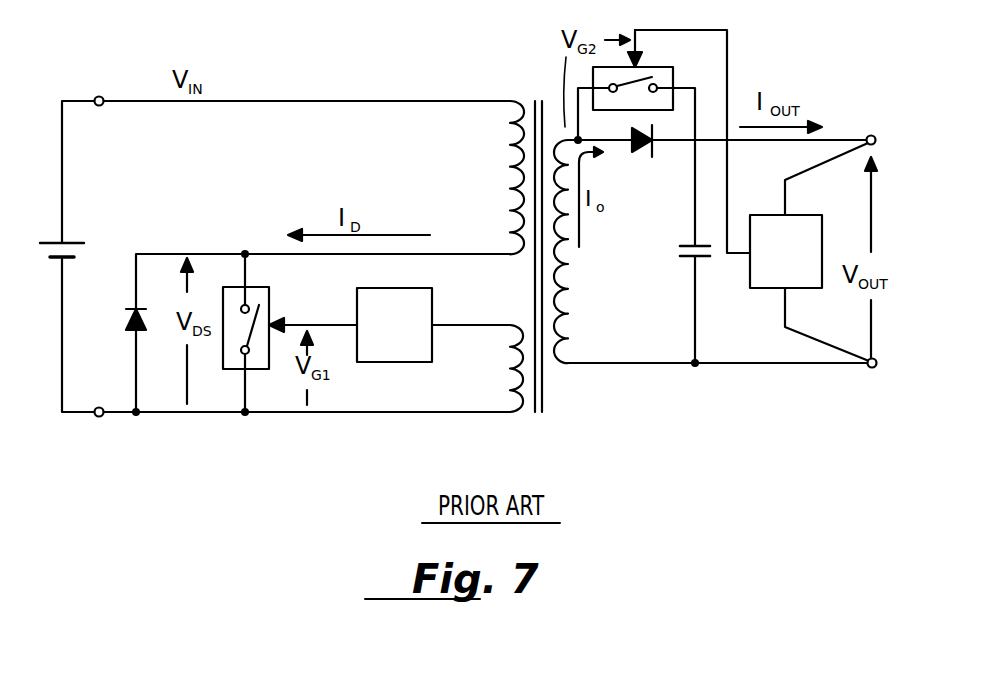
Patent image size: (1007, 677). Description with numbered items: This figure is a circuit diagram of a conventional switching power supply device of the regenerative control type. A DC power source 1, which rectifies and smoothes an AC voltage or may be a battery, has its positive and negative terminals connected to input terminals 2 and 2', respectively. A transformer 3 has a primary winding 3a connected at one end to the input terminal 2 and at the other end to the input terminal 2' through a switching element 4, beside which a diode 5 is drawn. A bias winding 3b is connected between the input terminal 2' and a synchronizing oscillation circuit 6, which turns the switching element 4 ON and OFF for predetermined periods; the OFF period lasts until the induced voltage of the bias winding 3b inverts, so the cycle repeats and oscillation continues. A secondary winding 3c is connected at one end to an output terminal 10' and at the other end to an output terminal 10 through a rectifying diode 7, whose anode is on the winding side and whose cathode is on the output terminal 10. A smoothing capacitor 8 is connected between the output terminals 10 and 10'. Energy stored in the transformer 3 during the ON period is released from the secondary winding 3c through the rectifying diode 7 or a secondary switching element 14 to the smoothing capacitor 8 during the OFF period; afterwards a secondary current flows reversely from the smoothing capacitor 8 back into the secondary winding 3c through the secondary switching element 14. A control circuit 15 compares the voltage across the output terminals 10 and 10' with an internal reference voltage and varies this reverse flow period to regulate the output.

The DC power source 1 is at (78, 241).
The input terminal 2 is at (113, 68).
The input terminal 2' is at (108, 446).
The transformer 3 is at (542, 222).
The primary winding 3a is at (512, 168).
The bias winding 3b is at (515, 358).
The secondary winding 3c is at (571, 298).
The switching element 4 is at (262, 301).
The diode 5 is at (127, 321).
The synchronizing oscillation circuit 6 is at (420, 312).
The rectifying diode 7 is at (644, 148).
The smoothing capacitor 8 is at (688, 262).
The output terminal 10 is at (884, 105).
The output terminal 10' is at (857, 396).
The secondary switching element 14 is at (665, 73).
The control circuit 15 is at (772, 274).